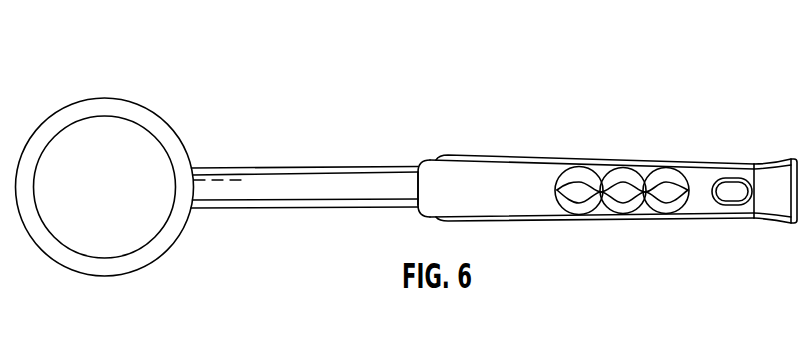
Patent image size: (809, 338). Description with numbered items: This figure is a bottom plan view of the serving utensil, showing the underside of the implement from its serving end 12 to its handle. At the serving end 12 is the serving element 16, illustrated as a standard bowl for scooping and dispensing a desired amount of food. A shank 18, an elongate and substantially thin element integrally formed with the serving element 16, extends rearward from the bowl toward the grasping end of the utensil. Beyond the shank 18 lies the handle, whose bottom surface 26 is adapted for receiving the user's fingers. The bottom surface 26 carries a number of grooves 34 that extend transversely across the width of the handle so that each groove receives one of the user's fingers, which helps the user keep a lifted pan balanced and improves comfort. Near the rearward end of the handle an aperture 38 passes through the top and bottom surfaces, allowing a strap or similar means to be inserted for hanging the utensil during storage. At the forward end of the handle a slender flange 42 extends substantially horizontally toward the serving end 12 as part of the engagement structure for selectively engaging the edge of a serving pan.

The serving end 12 is at (58, 79).
The serving element 16 is at (124, 117).
The shank 18 is at (230, 185).
The bottom surface 26 is at (479, 200).
The grooves 34 is at (578, 192).
The aperture 38 is at (733, 198).
The flange 42 is at (433, 183).